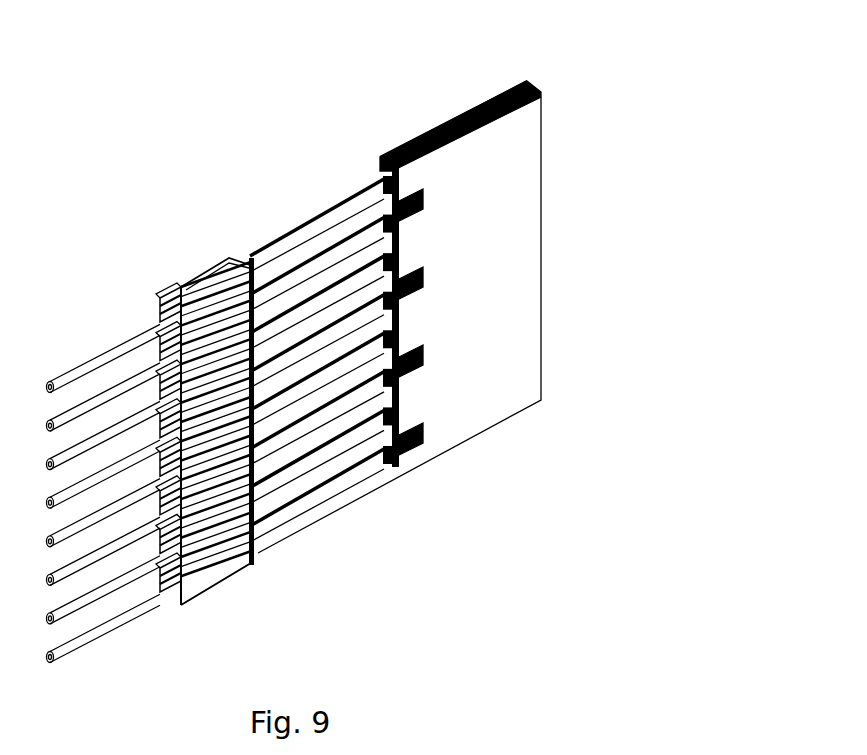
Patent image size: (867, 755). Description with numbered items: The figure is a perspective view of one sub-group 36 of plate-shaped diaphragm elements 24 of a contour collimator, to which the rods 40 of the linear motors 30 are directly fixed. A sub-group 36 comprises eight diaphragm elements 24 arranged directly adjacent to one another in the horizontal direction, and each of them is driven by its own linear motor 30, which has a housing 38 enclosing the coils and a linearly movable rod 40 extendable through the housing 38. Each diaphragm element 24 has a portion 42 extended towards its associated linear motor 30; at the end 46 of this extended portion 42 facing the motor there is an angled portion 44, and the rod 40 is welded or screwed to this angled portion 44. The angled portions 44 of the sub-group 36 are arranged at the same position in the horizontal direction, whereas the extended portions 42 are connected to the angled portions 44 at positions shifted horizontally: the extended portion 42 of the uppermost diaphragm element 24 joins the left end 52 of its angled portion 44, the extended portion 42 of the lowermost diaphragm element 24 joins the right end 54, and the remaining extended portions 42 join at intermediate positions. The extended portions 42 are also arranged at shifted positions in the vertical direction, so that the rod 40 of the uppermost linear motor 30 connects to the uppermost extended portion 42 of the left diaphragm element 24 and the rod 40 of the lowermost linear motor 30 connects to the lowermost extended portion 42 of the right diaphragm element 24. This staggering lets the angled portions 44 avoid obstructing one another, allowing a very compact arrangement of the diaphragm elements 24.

The diaphragm element 24 is at (458, 287).
The linear motor 30 is at (194, 277).
The sub-group of diaphragm elements 36 is at (447, 106).
The housing 38 is at (165, 290).
The rod 40 is at (118, 345).
The extended portion 42 is at (313, 222).
The angled portion 44 is at (265, 262).
The end 46 is at (400, 170).
The left end 52 is at (243, 250).
The right end 54 is at (264, 560).